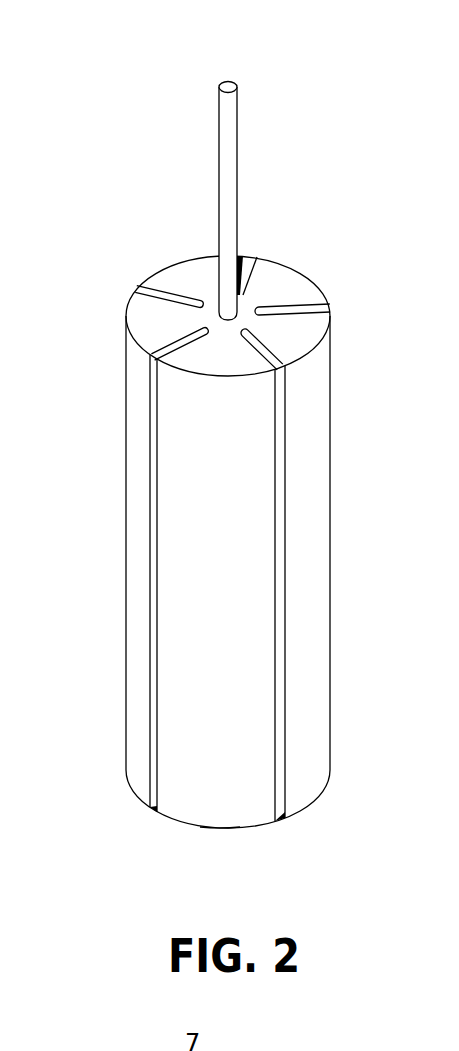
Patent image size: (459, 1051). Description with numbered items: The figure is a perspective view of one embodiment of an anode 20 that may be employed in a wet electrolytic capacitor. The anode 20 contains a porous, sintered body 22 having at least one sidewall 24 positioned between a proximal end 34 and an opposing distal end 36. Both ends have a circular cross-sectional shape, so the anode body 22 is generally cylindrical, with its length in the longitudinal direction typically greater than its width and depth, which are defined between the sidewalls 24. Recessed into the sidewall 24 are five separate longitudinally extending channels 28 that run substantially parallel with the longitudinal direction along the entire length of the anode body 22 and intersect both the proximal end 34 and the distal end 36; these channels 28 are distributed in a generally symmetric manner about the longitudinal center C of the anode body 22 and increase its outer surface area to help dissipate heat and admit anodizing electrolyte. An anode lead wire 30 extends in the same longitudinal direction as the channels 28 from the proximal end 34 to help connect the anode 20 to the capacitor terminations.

The anode 20 is at (90, 104).
The porous, sintered body 22 is at (226, 518).
The sidewall 24 is at (270, 542).
The channels 28 is at (145, 813).
The anode lead wire 30 is at (228, 168).
The proximal end 34 is at (282, 285).
The distal end 36 is at (210, 828).
The longitudinal center C is at (227, 322).